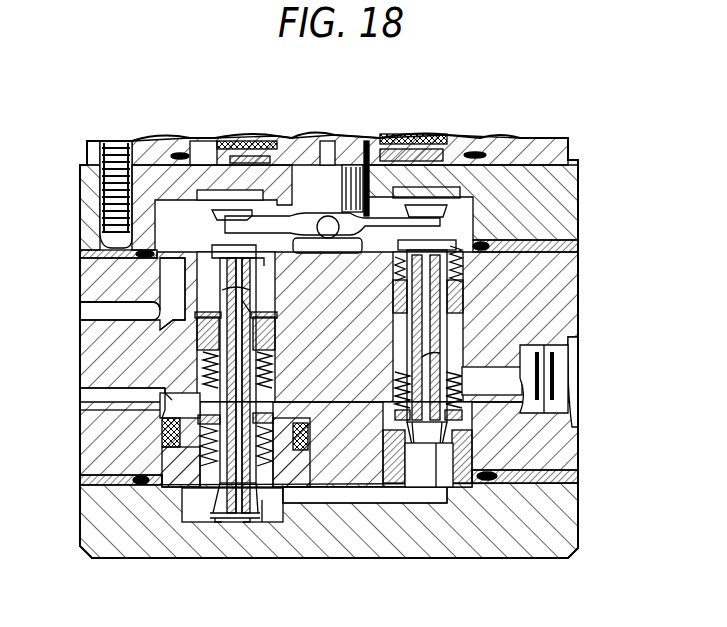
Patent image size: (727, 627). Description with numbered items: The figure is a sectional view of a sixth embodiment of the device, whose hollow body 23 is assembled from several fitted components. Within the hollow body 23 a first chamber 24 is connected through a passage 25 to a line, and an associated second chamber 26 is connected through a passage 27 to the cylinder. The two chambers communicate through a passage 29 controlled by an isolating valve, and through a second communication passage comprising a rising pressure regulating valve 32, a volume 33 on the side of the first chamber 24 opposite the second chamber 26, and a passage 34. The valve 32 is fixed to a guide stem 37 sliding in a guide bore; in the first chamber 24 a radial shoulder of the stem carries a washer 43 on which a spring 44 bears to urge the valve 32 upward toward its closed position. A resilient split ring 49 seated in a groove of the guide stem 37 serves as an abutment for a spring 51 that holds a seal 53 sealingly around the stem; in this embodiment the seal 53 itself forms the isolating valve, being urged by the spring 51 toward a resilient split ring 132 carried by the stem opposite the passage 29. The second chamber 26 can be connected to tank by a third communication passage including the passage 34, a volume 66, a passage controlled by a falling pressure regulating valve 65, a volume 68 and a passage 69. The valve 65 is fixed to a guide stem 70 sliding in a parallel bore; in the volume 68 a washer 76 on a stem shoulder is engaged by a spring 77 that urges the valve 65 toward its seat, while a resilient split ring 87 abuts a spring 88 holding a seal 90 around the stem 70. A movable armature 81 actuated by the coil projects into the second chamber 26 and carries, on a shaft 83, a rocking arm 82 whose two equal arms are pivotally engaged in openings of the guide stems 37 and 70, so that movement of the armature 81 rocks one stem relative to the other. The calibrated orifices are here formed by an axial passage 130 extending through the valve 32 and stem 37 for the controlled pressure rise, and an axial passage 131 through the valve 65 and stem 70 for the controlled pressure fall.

The hollow body 23 is at (584, 198).
The first chamber 24 is at (165, 412).
The passage 25 is at (80, 398).
The second chamber 26 is at (380, 214).
The passage 27 is at (80, 312).
The passage 29 is at (262, 268).
The rising pressure regulating valve 32 is at (214, 518).
The volume 33 is at (272, 508).
The passage 34 is at (358, 498).
The guide stem 37 is at (212, 243).
The washer 43 is at (268, 420).
The spring 44 is at (280, 448).
The resilient split ring 49 is at (206, 382).
The spring 51 is at (270, 354).
The seal 53 is at (192, 340).
The falling pressure regulating valve 65 is at (420, 484).
The volume 66 is at (442, 490).
The volume 68 is at (392, 438).
The passage 69 is at (510, 374).
The guide stem 70 is at (460, 331).
The washer 76 is at (396, 412).
The spring 77 is at (396, 388).
The movable armature 81 is at (352, 144).
The rocking arm 82 is at (316, 212).
The shaft 83 is at (330, 240).
The resilient split ring 87 is at (460, 232).
The spring 88 is at (462, 247).
The seal 90 is at (468, 290).
The passage 130 is at (240, 292).
The passage 131 is at (432, 358).
The resilient split ring 132 is at (252, 312).